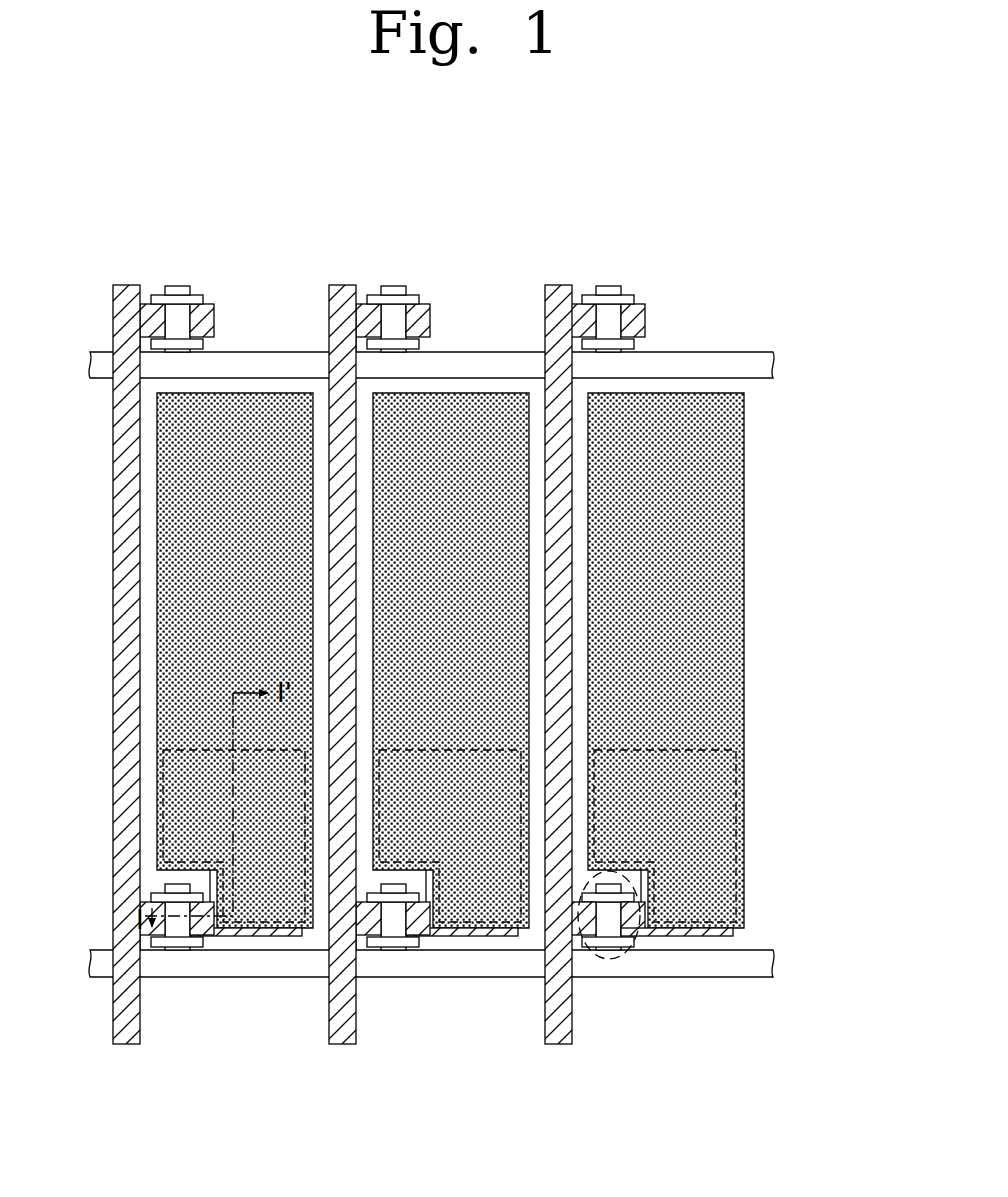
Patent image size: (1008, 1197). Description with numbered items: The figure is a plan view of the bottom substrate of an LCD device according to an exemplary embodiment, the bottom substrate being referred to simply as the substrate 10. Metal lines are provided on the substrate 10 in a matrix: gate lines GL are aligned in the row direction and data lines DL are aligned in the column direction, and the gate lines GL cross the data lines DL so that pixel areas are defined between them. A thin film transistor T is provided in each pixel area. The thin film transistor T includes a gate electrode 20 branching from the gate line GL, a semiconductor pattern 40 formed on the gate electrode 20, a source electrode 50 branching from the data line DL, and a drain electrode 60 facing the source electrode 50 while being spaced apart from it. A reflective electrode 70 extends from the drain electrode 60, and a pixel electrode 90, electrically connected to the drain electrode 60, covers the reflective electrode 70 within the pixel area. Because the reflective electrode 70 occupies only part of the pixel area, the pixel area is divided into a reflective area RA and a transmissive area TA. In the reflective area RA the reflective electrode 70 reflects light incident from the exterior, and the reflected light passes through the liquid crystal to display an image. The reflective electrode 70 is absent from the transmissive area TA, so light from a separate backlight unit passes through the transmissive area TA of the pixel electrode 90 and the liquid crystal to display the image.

The substrate 10 is at (477, 1181).
The gate electrode 20 is at (612, 940).
The semiconductor pattern 40 is at (617, 947).
The source electrode 50 is at (567, 910).
The drain electrode 60 is at (643, 933).
The reflective electrode 70 is at (247, 937).
The pixel electrode 90 is at (157, 593).
The gate line GL is at (773, 365).
The data line DL is at (133, 1045).
The transmissive area TA is at (706, 577).
The reflective area RA is at (706, 817).
The thin film transistor T is at (608, 963).